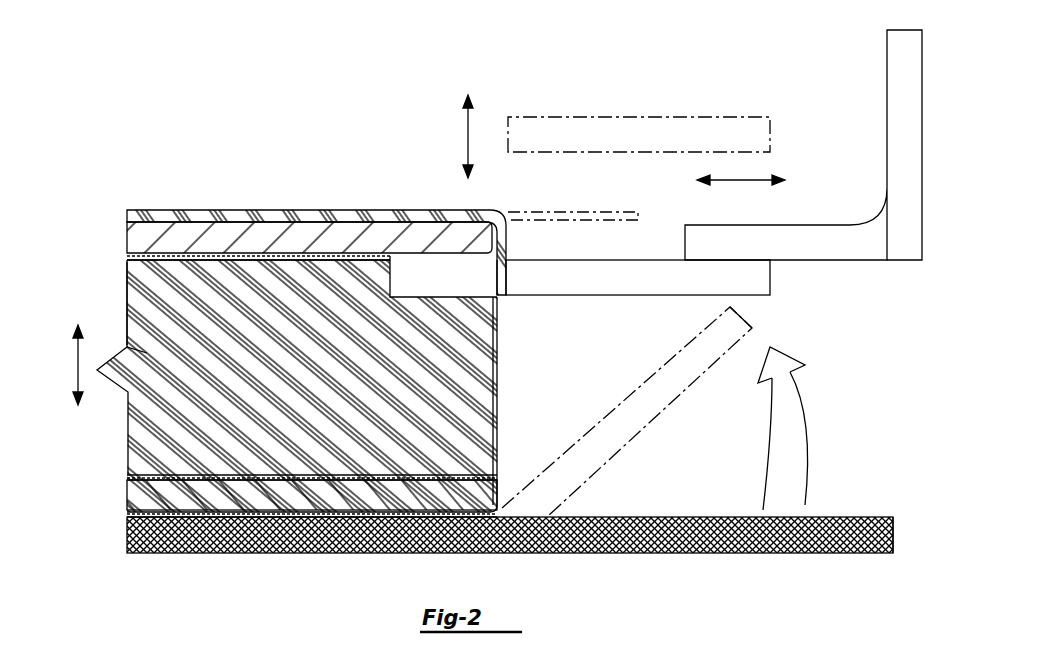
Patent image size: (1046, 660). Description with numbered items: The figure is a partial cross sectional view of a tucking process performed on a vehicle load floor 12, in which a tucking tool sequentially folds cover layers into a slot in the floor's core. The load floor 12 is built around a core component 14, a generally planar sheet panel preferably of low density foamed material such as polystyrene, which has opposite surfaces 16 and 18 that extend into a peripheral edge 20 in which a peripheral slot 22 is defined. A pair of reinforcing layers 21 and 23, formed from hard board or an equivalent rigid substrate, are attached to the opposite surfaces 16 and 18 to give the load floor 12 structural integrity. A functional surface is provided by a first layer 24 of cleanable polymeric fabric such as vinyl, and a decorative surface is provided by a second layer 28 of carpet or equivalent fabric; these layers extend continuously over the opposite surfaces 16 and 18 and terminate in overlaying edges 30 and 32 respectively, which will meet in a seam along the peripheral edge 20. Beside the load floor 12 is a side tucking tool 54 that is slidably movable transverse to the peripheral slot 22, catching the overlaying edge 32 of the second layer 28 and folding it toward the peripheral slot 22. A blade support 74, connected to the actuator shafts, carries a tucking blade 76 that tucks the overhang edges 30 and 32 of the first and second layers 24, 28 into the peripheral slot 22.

The load floor 12 is at (325, 165).
The core component 14 is at (165, 318).
The opposite surface 16 is at (168, 278).
The opposite surface 18 is at (150, 470).
The peripheral edge 20 is at (500, 372).
The reinforcing layer 21 is at (160, 232).
The peripheral slot 22 is at (393, 280).
The reinforcing layer 23 is at (163, 500).
The first layer 24 is at (300, 553).
The second layer 28 is at (378, 214).
The overlaying edge 30 is at (506, 240).
The overlaying edge 32 is at (893, 535).
The side tucking tool 54 is at (870, 136).
The blade support 74 is at (866, 247).
The tucking blade 76 is at (624, 283).